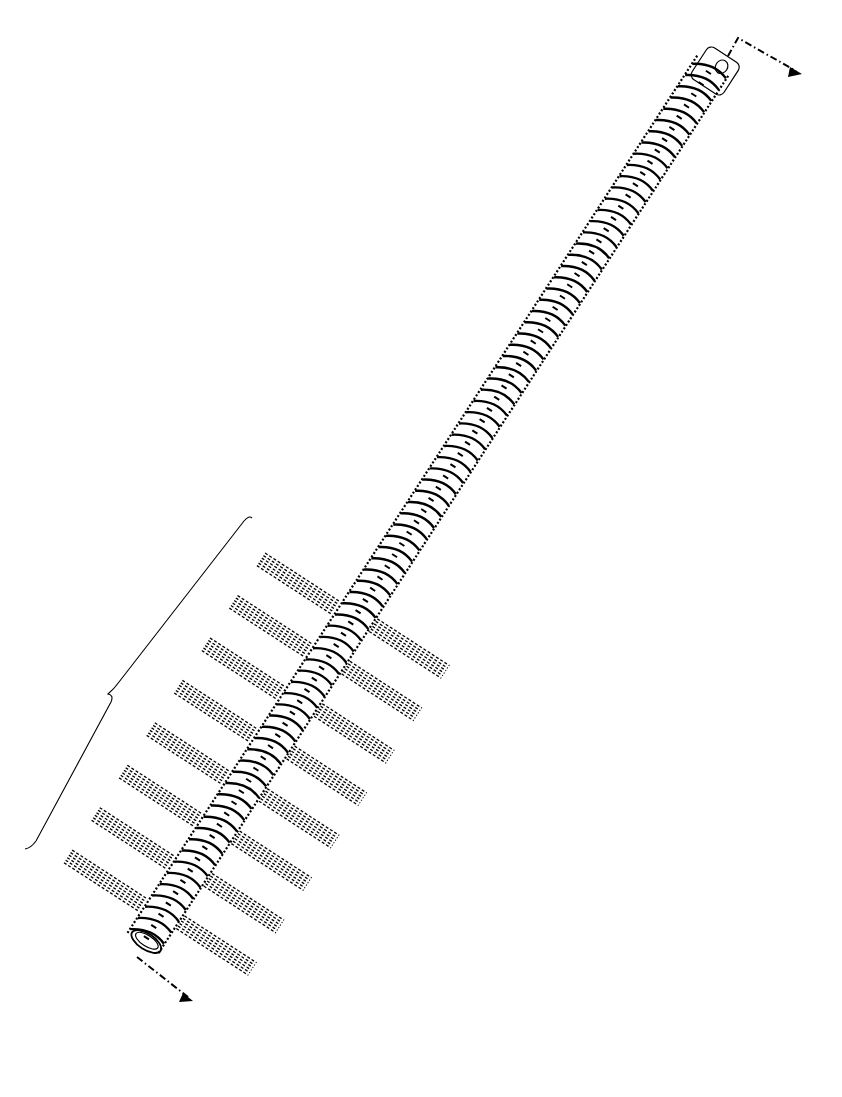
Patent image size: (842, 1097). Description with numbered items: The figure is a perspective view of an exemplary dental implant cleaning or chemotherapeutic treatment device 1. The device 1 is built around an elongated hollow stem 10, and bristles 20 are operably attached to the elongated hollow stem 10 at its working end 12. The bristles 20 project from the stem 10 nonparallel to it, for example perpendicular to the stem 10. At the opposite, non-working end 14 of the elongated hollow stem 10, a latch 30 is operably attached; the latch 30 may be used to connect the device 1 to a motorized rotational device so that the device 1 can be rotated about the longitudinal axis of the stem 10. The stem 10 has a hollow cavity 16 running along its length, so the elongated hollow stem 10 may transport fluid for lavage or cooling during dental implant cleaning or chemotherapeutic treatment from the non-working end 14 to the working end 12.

The dental implant cleaning or chemotherapeutic treatment device 1 is at (451, 158).
The elongated hollow stem 10 is at (457, 477).
The working end 12 is at (413, 580).
The non-working end 14 is at (677, 133).
The hollow cavity 16 is at (126, 970).
The bristles 20 is at (237, 748).
The latch 30 is at (700, 62).